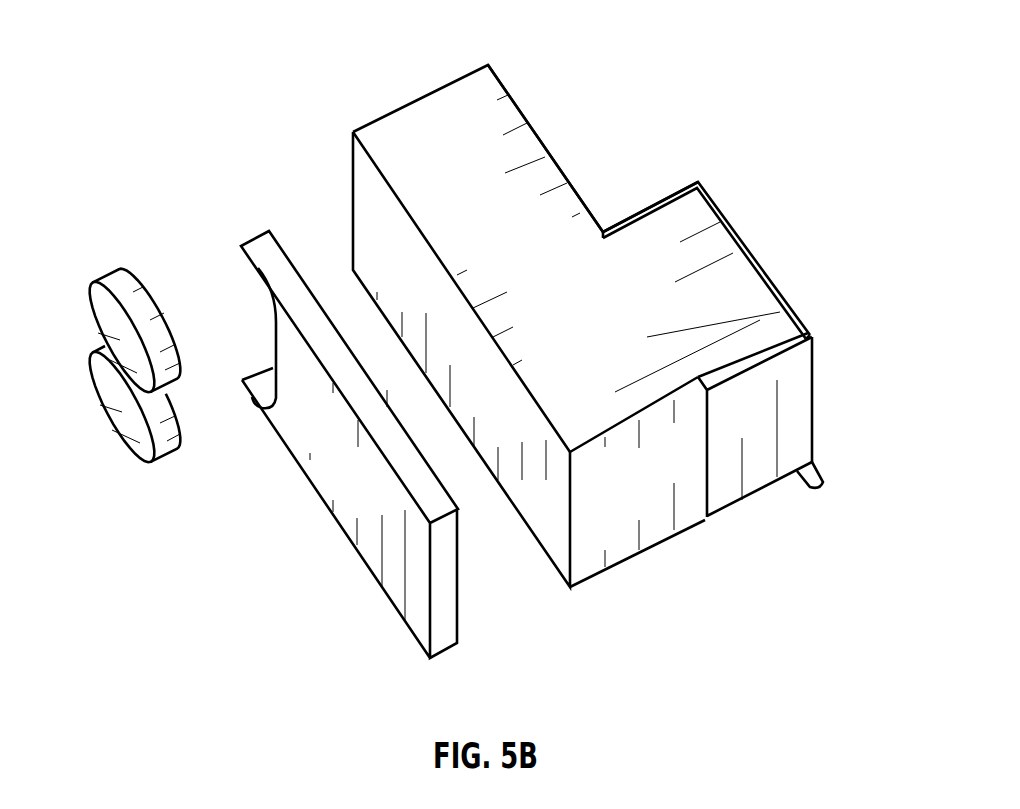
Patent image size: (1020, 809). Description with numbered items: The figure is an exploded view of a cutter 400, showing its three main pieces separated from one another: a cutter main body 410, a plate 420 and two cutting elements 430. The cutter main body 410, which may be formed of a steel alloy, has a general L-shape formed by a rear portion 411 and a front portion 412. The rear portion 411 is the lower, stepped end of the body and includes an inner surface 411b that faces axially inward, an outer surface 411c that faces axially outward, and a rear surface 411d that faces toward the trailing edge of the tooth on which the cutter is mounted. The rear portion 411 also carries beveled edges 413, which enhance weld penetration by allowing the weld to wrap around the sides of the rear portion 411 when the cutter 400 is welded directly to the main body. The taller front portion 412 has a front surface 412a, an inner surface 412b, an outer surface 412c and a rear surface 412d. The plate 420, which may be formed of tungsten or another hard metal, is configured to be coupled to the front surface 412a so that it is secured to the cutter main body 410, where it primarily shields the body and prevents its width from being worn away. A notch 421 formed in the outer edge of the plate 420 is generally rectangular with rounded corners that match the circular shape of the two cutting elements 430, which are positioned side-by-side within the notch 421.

The cutter 400 is at (215, 40).
The cutter main body 410 is at (793, 193).
The rear portion 411 is at (710, 530).
The inner surface 411b is at (788, 408).
The outer surface 411c is at (630, 212).
The rear surface 411d is at (813, 361).
The front portion 412 is at (582, 597).
The front surface 412a is at (358, 210).
The inner surface 412b is at (584, 584).
The outer surface 412c is at (418, 97).
The rear surface 412d is at (512, 100).
The beveled edges 413 is at (699, 177).
The plate 420 is at (318, 516).
The notch 421 is at (262, 337).
The cutting elements 430 is at (93, 310).